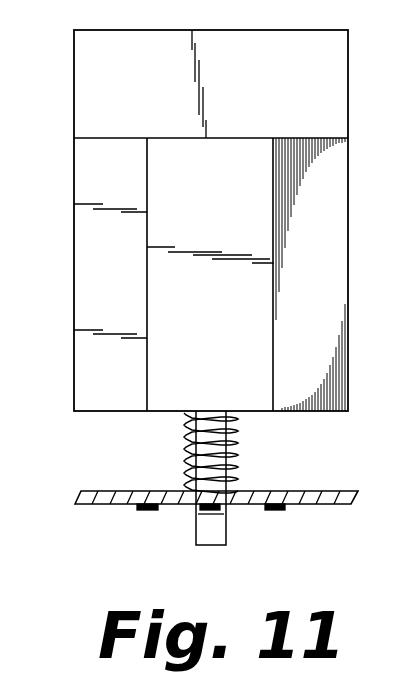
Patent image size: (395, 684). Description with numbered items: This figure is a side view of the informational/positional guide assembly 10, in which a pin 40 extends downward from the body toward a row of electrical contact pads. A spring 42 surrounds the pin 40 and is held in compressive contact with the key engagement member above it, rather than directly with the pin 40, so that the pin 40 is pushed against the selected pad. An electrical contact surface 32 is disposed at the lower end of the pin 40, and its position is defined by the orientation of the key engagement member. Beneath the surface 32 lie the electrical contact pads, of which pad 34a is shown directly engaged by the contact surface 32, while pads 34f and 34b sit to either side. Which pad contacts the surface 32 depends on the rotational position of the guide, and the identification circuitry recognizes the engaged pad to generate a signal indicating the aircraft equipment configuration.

The device body 10 is at (74, 92).
The electrical contact surface 32 is at (213, 516).
The electrical contact pad 34a is at (208, 512).
The electrical contact pad 34b is at (275, 511).
The electrical contact pad 34f is at (150, 511).
The pin 40 is at (186, 468).
The spring 42 is at (240, 470).